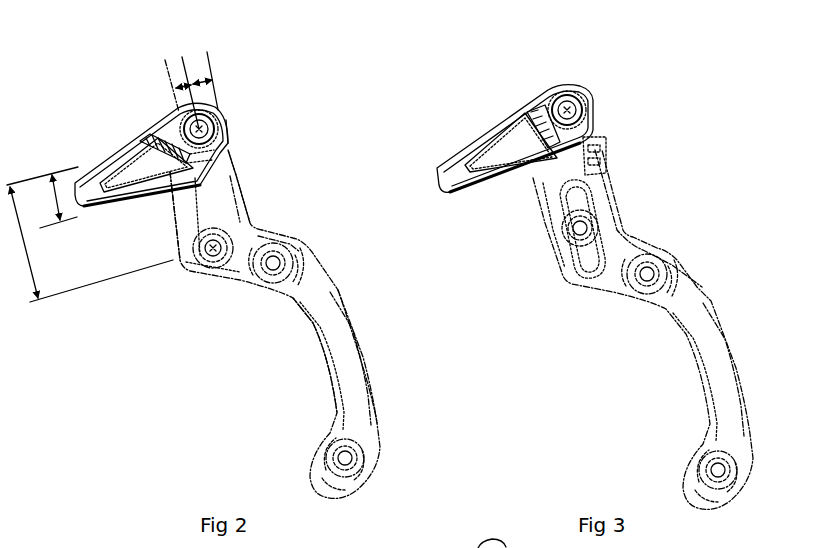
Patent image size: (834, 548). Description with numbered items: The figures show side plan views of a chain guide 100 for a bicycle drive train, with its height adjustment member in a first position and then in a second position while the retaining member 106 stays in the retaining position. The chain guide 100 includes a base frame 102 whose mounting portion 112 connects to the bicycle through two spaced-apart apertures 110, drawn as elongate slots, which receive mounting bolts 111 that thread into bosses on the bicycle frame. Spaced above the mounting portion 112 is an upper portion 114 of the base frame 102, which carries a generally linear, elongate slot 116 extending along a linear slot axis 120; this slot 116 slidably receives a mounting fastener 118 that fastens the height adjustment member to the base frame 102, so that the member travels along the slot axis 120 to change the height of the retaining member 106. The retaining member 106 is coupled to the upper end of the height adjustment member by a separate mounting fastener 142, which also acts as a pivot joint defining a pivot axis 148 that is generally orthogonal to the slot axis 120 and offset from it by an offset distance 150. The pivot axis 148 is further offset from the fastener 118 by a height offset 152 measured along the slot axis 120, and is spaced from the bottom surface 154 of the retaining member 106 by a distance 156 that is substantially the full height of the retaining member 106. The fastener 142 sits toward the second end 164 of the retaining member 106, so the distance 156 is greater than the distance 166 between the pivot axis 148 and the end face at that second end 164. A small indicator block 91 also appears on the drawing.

In FIG. 2, the chain guide 100 is at (318, 125).
In FIG. 3, the chain guide 100 is at (676, 125).
In FIG. 2, the base frame 102 is at (260, 225).
In FIG. 3, the base frame 102 is at (632, 233).
In FIG. 2, the retaining member 106 is at (83, 177).
In FIG. 3, the retaining member 106 is at (450, 150).
In FIG. 2, the apertures 110 is at (255, 255).
In FIG. 2, the mounting bolts 111 is at (279, 260).
In FIG. 3, the mounting bolts 111 is at (653, 271).
In FIG. 2, the mounting portion 112 is at (370, 357).
In FIG. 2, the upper portion 114 is at (250, 185).
In FIG. 3, the slot 116 is at (568, 207).
In FIG. 3, the mounting fastener 118 is at (575, 233).
In FIG. 2, the linear slot axis 120 is at (168, 77).
In FIG. 2, the mounting fastener 142 is at (204, 128).
In FIG. 3, the mounting fastener 142 is at (572, 110).
In FIG. 2, the pivot axis 148 is at (222, 143).
In FIG. 3, the pivot axis 148 is at (567, 100).
In FIG. 2, the offset distance 150 is at (178, 88).
In FIG. 2, the height offset 152 is at (27, 284).
In FIG. 2, the bottom surface 154 is at (142, 210).
In FIG. 2, the distance 156 is at (44, 228).
In FIG. 2, the second end 164 is at (238, 121).
In FIG. 2, the distance 166 is at (200, 90).
In FIG. 3, the indicator block 91 is at (596, 143).